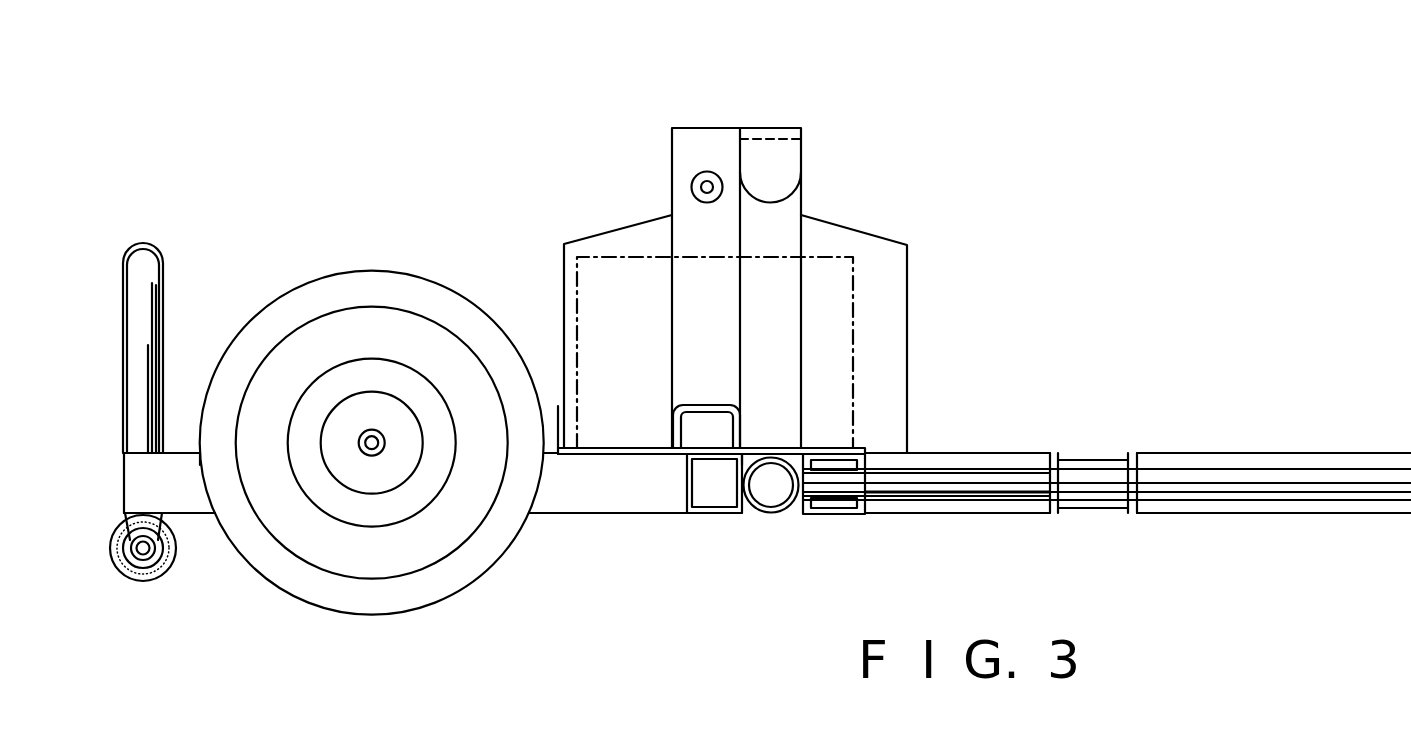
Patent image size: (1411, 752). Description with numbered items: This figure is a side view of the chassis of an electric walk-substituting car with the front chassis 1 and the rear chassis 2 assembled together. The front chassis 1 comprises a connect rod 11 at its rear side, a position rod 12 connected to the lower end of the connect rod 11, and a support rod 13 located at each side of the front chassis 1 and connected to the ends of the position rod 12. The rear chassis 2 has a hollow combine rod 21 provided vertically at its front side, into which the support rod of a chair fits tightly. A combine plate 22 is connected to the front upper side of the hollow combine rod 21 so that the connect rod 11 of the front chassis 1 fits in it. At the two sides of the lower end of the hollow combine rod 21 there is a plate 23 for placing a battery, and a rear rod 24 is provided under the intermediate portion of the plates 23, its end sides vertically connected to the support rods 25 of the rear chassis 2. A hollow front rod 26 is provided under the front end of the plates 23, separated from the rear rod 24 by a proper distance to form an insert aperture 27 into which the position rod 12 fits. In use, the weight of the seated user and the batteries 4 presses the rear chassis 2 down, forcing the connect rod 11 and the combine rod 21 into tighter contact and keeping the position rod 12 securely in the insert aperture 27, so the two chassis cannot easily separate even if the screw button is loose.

The front chassis 1 is at (1073, 440).
The rear chassis 2 is at (312, 263).
The batteries 4 is at (601, 278).
The connect rod 11 is at (780, 218).
The position rod 12 is at (785, 512).
The support rod 13 is at (1008, 502).
The hollow combine rod 21 is at (703, 142).
The combine plate 22 is at (767, 153).
The plate 23 is at (651, 456).
The rear rod 24 is at (707, 516).
The support rod 25 is at (601, 478).
The hollow front rod 26 is at (838, 516).
The insert aperture 27 is at (752, 512).